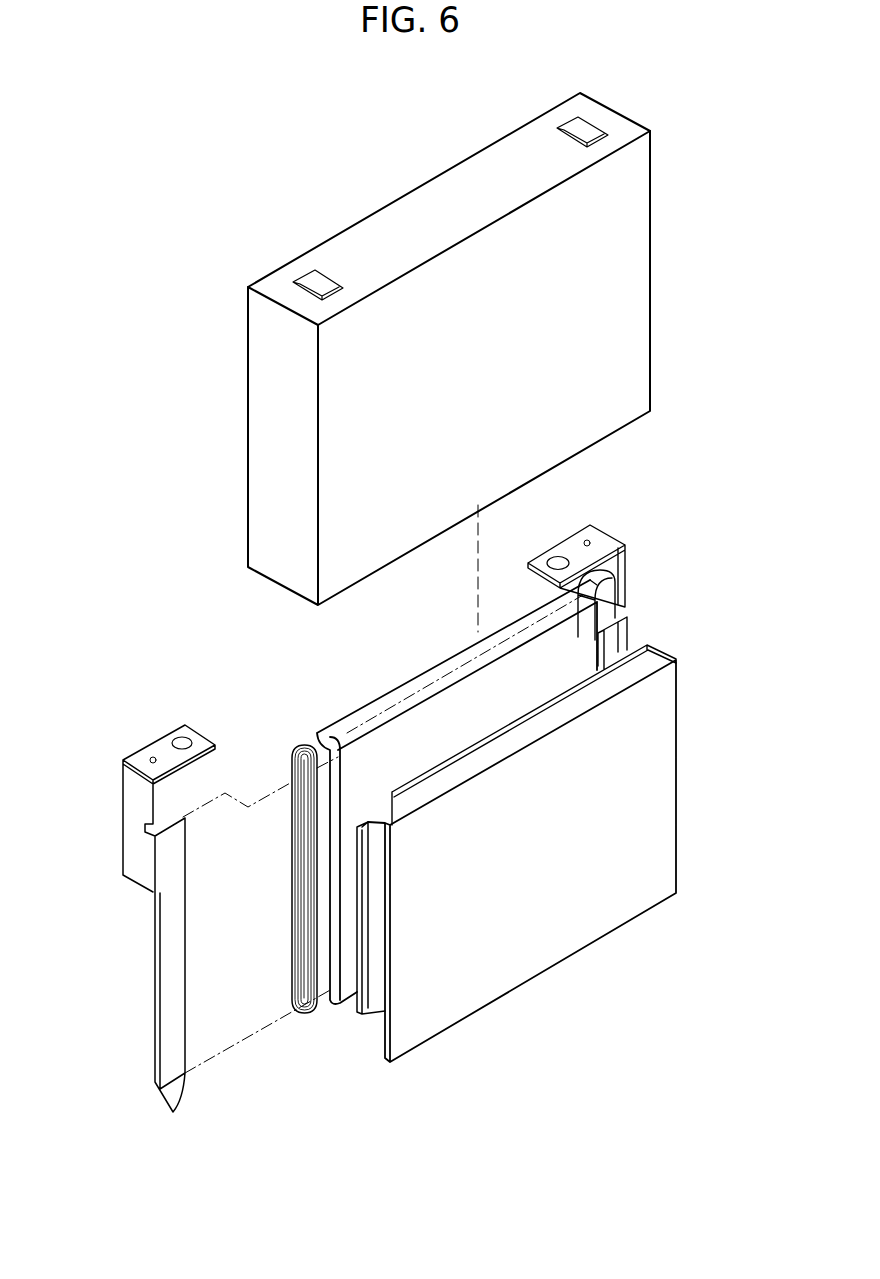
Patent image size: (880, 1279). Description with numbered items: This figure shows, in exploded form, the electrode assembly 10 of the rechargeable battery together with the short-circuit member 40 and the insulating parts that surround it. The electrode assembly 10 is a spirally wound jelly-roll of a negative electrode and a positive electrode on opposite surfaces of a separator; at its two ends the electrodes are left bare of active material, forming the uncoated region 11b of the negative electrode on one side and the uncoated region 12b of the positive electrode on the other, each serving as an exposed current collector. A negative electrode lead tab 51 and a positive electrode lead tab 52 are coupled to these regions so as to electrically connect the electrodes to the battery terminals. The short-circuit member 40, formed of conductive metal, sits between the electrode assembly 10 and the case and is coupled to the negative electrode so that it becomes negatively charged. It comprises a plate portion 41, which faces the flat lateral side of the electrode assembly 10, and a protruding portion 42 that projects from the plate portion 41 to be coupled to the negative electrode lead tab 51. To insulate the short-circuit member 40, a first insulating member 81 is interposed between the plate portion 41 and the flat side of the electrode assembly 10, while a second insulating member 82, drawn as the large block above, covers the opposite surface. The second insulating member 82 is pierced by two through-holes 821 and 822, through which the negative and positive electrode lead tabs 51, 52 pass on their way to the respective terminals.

The electrode assembly 10 is at (433, 796).
The uncoated region of the negative electrode 11b is at (308, 742).
The uncoated region of the positive electrode 12b is at (605, 590).
The short-circuit member 40 is at (560, 863).
The plate portion 41 is at (658, 808).
The protruding portion 42 is at (367, 975).
The negative electrode lead tab 51 is at (132, 805).
The positive electrode lead tab 52 is at (602, 543).
The first insulating member 81 is at (633, 647).
The second insulating member 82 is at (449, 323).
The through-hole 821 is at (312, 288).
The through-hole 822 is at (587, 137).